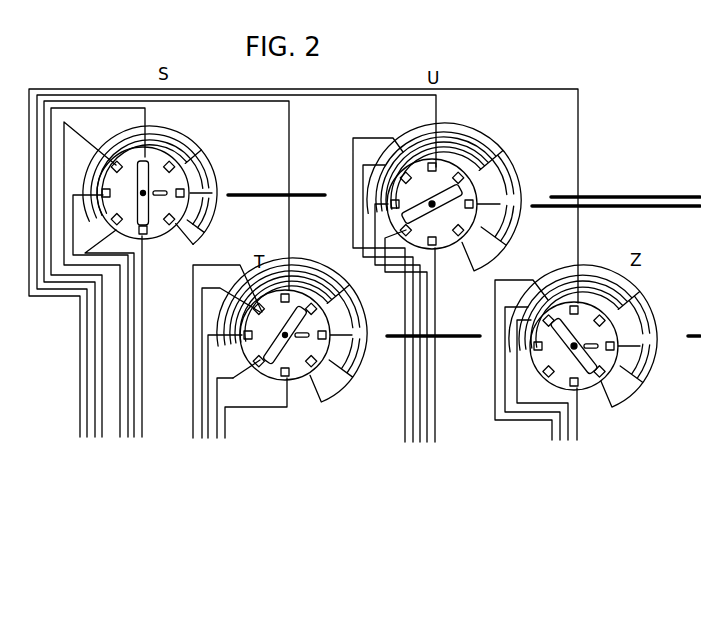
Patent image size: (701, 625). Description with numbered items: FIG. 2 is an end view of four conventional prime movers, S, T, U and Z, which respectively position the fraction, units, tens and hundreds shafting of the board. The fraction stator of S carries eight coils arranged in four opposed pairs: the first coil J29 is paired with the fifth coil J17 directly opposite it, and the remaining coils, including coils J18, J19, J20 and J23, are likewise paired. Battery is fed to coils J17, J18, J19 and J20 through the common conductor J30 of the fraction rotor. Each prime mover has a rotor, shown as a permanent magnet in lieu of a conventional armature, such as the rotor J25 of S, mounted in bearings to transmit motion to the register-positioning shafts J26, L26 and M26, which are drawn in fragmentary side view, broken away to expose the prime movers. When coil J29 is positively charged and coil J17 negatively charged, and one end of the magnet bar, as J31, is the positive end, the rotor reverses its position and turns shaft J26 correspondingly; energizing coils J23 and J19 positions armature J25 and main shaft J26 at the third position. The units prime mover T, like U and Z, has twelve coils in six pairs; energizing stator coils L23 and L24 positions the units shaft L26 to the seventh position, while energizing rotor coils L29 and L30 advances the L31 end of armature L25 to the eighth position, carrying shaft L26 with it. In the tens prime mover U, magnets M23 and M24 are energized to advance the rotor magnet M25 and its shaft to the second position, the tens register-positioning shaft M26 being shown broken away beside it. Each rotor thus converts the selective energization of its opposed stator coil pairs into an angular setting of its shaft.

The fifth stator coil J17 is at (118, 163).
The stator coil J18 is at (172, 168).
The stator coil J19 is at (203, 210).
The stator coil J20 is at (211, 217).
The stator coil J23 is at (116, 186).
The rotor J25 is at (144, 186).
The main shaft J26 is at (284, 194).
The first stator coil J29 is at (150, 240).
The common conductor J30 is at (152, 128).
The magnet bar end J31 is at (198, 240).
The stator coil L23 is at (277, 374).
The stator coil L24 is at (267, 314).
The armature L25 is at (288, 334).
The units shaft L26 is at (437, 333).
The rotor coil L29 is at (239, 379).
The rotor coil L30 is at (306, 304).
The armature end L31 is at (309, 372).
The magnet M23 is at (432, 205).
The magnet M24 is at (432, 178).
The rotor magnet M25 is at (400, 202).
The register-positioning shaft M26 is at (616, 213).